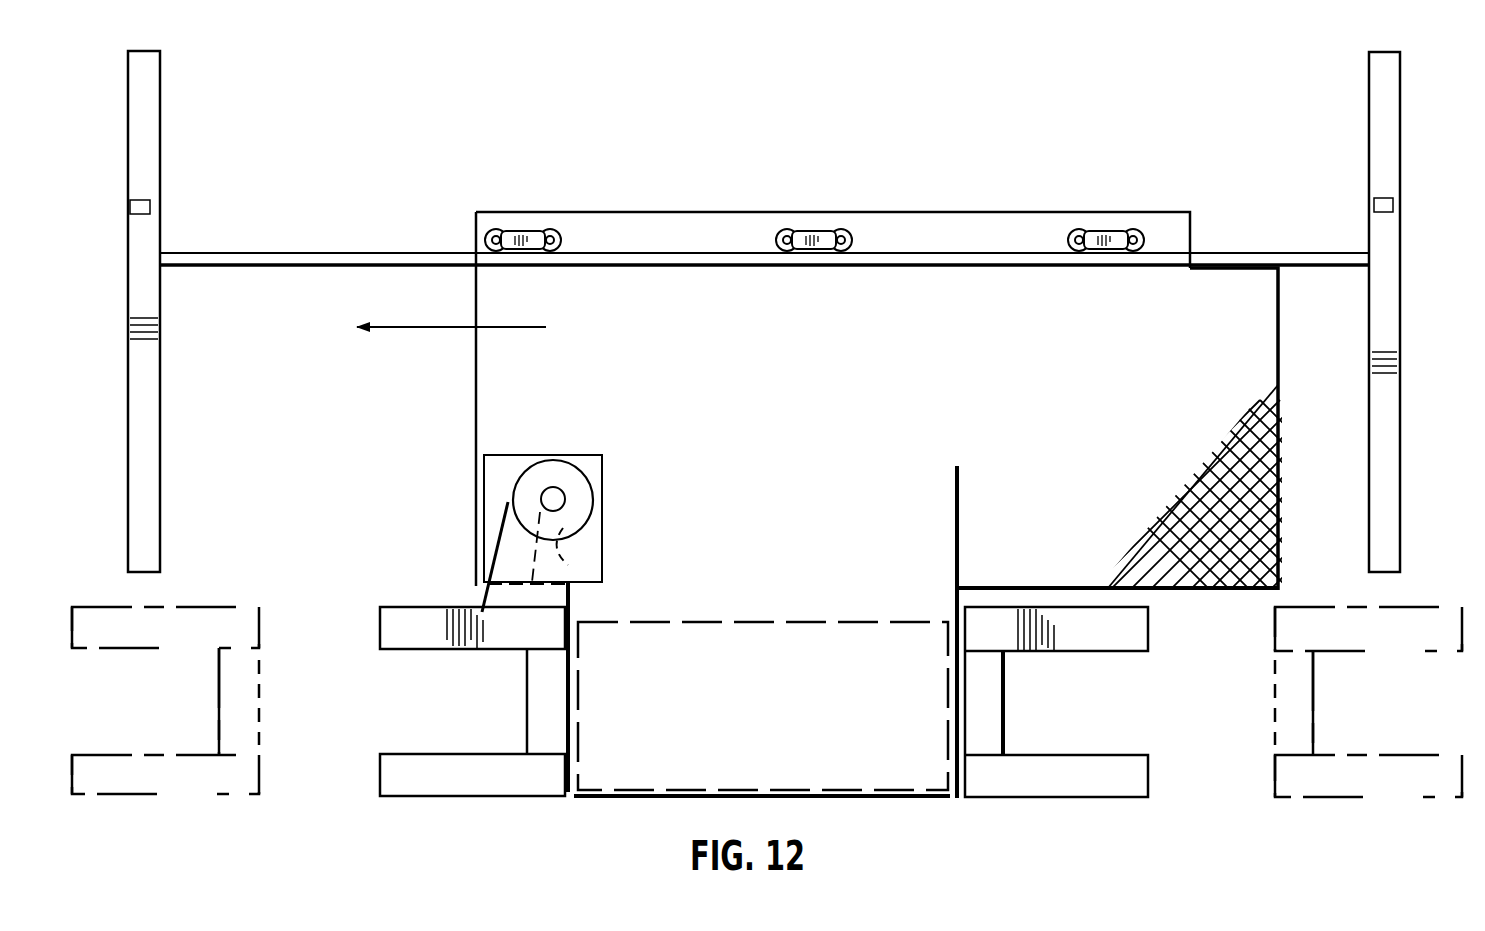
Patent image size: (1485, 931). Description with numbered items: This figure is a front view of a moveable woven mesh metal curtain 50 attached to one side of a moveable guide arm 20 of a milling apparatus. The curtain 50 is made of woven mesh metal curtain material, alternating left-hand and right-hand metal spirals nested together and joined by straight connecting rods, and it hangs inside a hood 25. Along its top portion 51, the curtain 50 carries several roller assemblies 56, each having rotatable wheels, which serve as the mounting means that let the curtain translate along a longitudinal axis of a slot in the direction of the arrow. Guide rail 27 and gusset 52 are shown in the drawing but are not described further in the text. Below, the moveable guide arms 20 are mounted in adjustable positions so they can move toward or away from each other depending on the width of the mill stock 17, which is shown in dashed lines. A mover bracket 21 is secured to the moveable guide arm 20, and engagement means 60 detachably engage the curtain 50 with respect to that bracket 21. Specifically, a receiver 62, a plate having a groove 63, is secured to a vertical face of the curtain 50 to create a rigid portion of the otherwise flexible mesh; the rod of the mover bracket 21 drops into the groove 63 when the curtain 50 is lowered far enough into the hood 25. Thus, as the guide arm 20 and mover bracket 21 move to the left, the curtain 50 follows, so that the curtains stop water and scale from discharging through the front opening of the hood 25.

The mill stock 17 is at (772, 727).
The moveable guide arm 20 is at (170, 752).
The mover bracket 21 is at (517, 543).
The hood 25 is at (152, 418).
The rail 27 is at (324, 258).
The moveable woven mesh metal curtain 50 is at (812, 397).
The top portion 51 is at (1170, 228).
The gusset 52 is at (1255, 566).
The roller assembly 56 is at (523, 231).
The engagement means 60 is at (524, 507).
The receiver 62 is at (501, 469).
The groove 63 is at (572, 563).